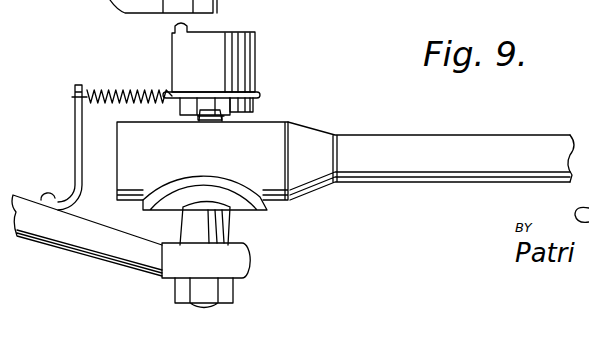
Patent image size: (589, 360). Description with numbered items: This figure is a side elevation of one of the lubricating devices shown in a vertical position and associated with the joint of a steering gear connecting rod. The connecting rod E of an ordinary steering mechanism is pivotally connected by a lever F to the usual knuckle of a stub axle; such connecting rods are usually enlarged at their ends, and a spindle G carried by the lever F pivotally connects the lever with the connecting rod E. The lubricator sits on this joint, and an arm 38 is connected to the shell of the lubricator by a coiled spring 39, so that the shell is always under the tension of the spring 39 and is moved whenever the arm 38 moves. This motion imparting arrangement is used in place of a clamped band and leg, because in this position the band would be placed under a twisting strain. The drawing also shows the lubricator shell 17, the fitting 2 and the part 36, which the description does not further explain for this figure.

The solenoid cylinder 17 is at (213, 60).
The nut 2 is at (250, 109).
The spring 39 is at (110, 87).
The pipe 38 is at (72, 125).
The connection 36 is at (97, 128).
The pipe E is at (377, 143).
The valve stem and packing nut G is at (230, 232).
The lever F is at (78, 252).